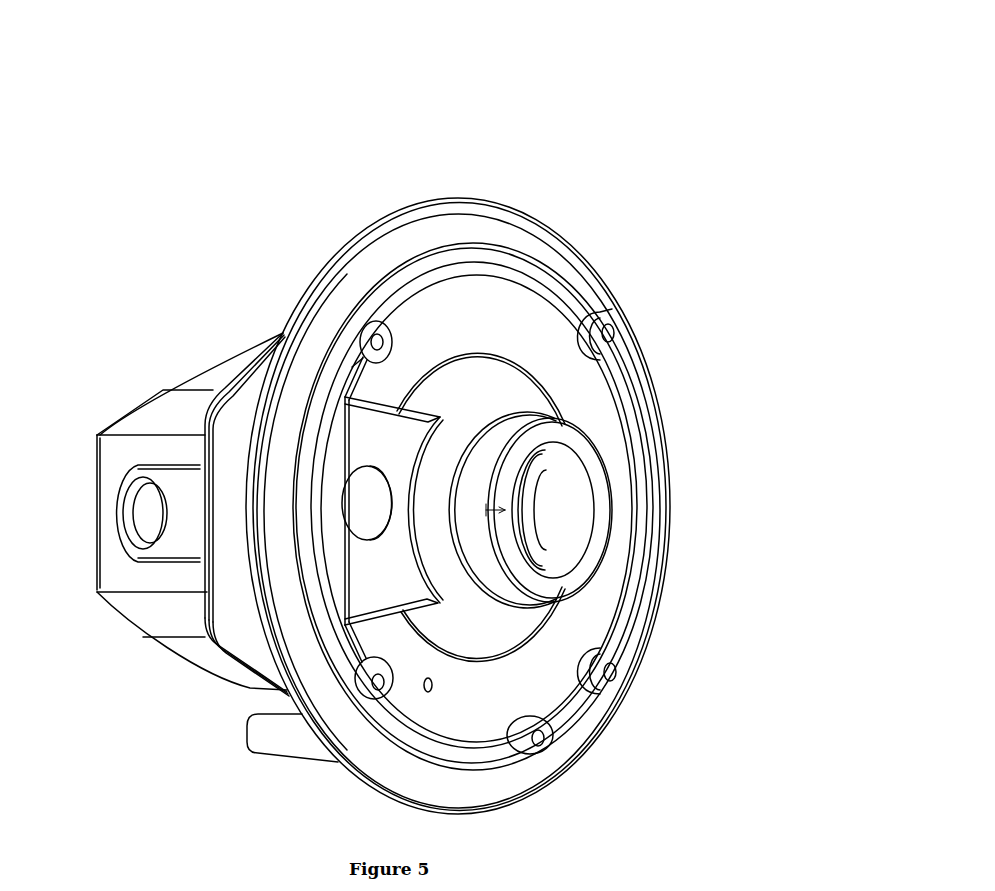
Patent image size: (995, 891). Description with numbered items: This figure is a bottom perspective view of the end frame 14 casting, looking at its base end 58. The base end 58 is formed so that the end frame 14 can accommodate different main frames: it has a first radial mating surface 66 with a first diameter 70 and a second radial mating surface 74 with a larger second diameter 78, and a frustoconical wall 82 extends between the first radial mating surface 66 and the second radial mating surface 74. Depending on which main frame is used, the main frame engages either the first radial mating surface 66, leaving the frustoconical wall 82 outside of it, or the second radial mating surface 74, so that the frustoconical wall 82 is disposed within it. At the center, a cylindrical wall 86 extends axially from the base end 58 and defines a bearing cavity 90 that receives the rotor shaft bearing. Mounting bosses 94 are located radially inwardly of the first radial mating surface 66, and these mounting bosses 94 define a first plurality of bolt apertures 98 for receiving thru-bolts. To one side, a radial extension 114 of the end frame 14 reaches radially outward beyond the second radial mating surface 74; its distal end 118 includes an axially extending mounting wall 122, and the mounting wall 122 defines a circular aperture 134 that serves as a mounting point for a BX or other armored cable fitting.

The end frame 14 is at (630, 193).
The base end 58 is at (676, 449).
The first radial mating surface 66 is at (480, 242).
The first diameter 70 is at (440, 262).
The second radial mating surface 74 is at (350, 263).
The second diameter 78 is at (417, 220).
The frustoconical wall 82 is at (357, 735).
The cylindrical wall 86 is at (573, 437).
The bearing cavity 90 is at (590, 480).
The mounting bosses 94 is at (610, 347).
The bolt apertures 98 is at (610, 330).
The radial extension 114 is at (231, 416).
The distal end 118 is at (208, 582).
The mounting wall 122 is at (112, 455).
The circular aperture 134 is at (125, 528).